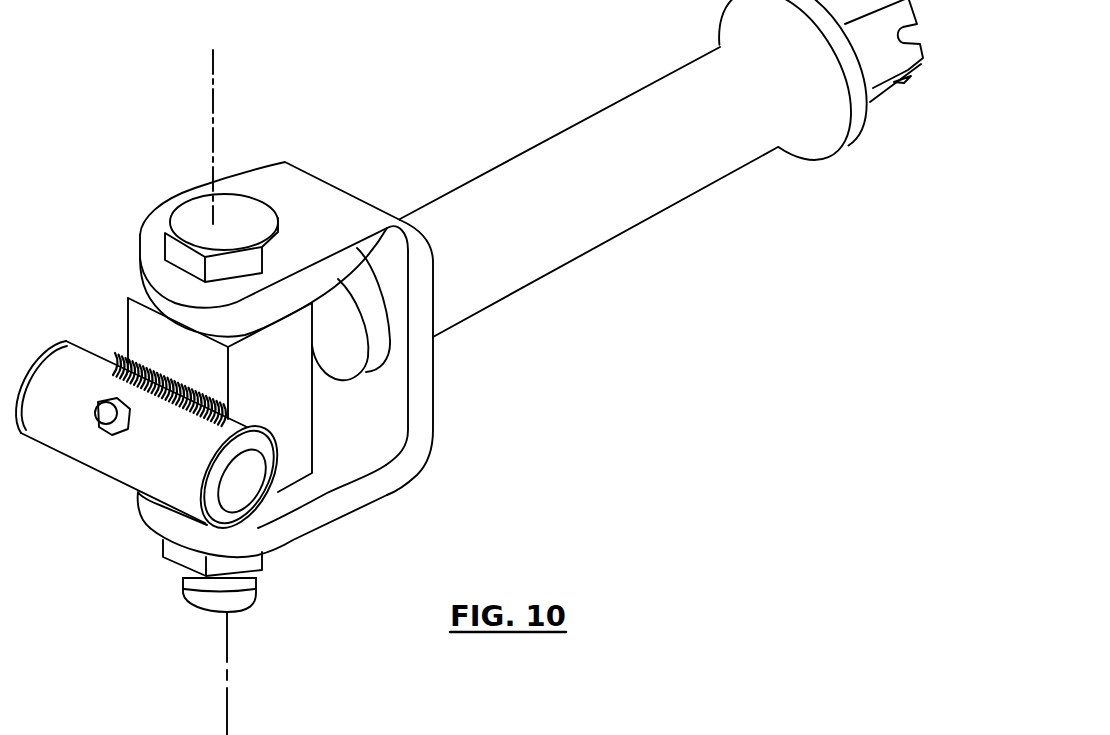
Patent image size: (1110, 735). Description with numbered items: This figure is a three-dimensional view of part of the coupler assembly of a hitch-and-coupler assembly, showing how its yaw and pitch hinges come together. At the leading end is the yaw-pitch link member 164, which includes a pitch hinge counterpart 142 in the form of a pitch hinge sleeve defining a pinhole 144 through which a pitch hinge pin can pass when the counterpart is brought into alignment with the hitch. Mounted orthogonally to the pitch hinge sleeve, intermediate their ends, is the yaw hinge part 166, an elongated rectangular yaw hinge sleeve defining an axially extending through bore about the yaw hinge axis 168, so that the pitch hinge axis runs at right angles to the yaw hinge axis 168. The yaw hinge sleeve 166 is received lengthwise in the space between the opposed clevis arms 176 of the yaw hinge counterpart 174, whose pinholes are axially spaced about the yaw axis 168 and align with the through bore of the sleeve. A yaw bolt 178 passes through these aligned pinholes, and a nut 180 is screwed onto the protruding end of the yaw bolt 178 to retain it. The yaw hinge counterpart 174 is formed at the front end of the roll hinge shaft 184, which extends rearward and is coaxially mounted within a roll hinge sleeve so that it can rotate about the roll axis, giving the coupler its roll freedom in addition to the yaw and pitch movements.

The yaw-pitch link member 164 is at (86, 301).
The yaw hinge axis 168 is at (215, 78).
The clevis arms 176 is at (303, 195).
The yaw hinge counterpart 174 is at (440, 401).
The yaw hinge part 166 is at (298, 402).
The yaw bolt 178 is at (195, 218).
The pitch hinge counterpart 142 is at (96, 463).
The pinhole 144 is at (240, 488).
The nut 180 is at (180, 557).
The roll hinge shaft 184 is at (553, 153).